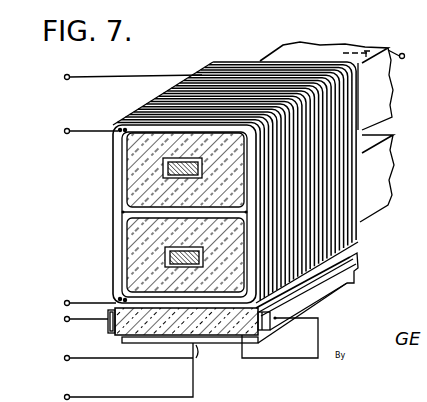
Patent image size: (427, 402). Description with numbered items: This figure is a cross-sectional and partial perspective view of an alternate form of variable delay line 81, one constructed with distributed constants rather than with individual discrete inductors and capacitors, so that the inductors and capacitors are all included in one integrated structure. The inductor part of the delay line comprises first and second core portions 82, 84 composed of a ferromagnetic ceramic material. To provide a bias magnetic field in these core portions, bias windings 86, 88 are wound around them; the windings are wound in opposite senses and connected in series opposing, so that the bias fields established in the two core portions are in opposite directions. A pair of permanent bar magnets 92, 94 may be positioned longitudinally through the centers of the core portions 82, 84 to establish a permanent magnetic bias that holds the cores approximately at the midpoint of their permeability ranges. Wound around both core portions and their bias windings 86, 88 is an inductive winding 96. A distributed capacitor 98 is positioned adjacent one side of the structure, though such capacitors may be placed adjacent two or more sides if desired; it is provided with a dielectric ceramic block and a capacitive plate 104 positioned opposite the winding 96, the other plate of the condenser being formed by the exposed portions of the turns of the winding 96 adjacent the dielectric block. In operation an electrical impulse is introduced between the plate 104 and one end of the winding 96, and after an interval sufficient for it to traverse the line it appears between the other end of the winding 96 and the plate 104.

The delay line 81 is at (104, 203).
The first core portion 82 is at (138, 157).
The second core portion 84 is at (135, 245).
The bias winding 86 is at (117, 146).
The bias winding 88 is at (128, 226).
The permanent bar magnet 92 is at (165, 172).
The permanent bar magnet 94 is at (170, 258).
The inductive winding 96 is at (119, 125).
The distributed capacitor 98 is at (100, 329).
The capacitive plate 104 is at (200, 363).